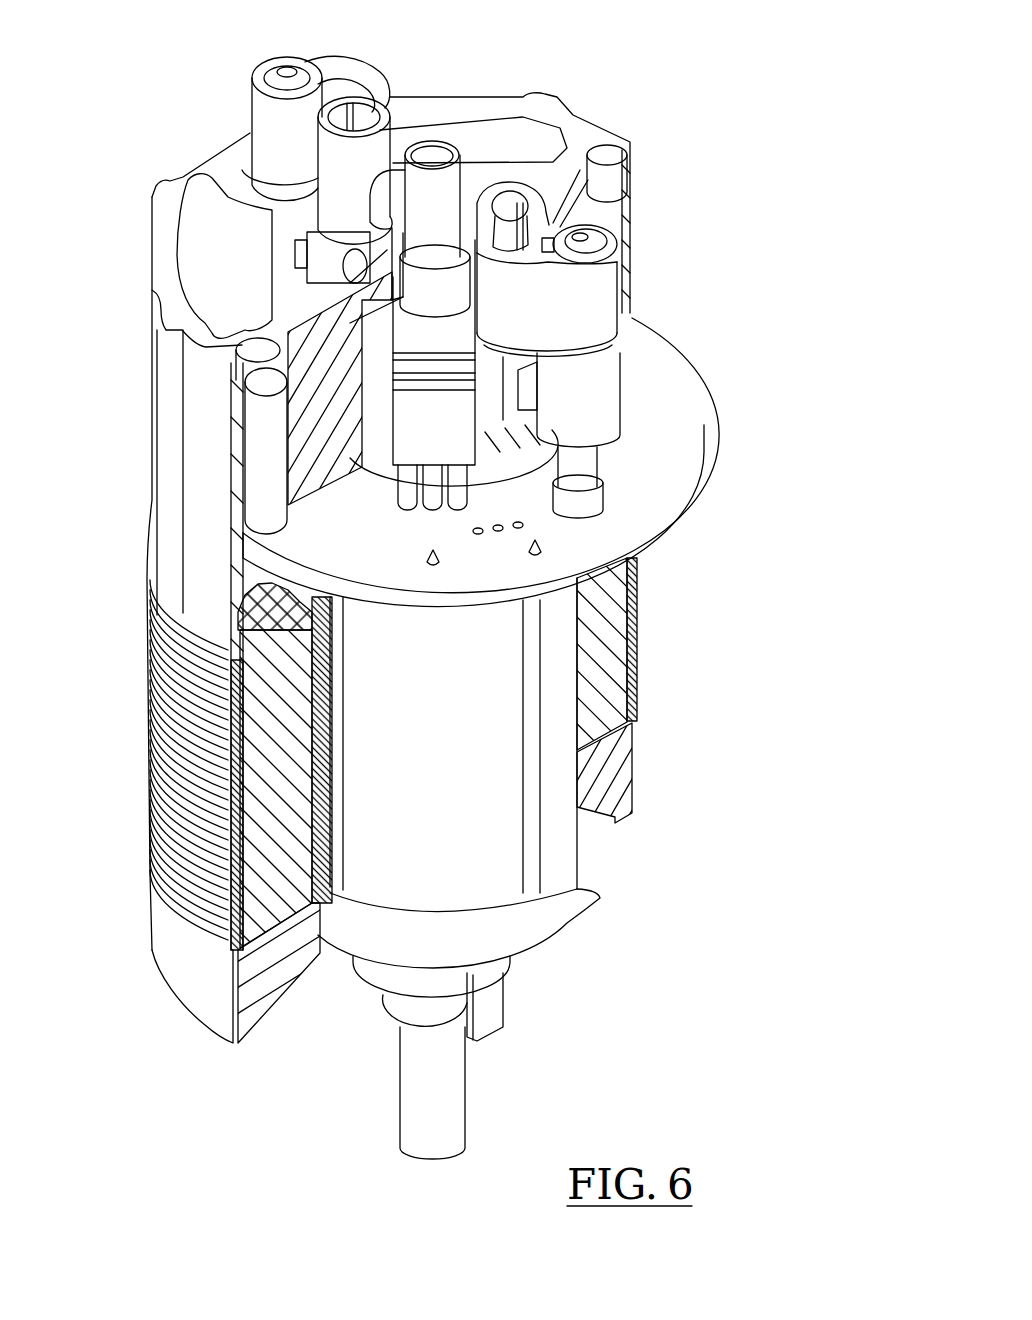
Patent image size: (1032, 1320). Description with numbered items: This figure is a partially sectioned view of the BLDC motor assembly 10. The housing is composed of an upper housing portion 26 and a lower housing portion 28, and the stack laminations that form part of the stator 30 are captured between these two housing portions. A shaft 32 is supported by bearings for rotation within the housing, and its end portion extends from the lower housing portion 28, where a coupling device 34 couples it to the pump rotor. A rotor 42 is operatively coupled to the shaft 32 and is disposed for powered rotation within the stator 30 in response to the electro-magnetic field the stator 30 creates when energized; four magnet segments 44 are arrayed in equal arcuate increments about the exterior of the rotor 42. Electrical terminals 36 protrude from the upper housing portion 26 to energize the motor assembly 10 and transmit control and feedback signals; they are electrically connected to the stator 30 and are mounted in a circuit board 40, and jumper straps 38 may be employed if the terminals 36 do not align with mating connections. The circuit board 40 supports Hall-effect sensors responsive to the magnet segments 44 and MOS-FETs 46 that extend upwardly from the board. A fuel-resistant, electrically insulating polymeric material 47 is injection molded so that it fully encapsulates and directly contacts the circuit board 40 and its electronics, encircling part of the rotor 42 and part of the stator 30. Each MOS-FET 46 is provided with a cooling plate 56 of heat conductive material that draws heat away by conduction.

The motor assembly 10 is at (837, 177).
The upper housing portion 26 is at (153, 385).
The lower housing portion 28 is at (152, 926).
The stator 30 is at (147, 810).
The shaft 32 is at (467, 1100).
The coupling device 34 is at (507, 1000).
The electrical terminals 36 is at (287, 72).
The jumper straps 38 is at (387, 93).
The circuit board 40 is at (678, 347).
The rotor 42 is at (545, 940).
The magnet segments 44 is at (560, 785).
The MOS-FET 46 is at (457, 422).
The polymeric material 47 is at (296, 273).
The cooling plate 56 is at (312, 270).